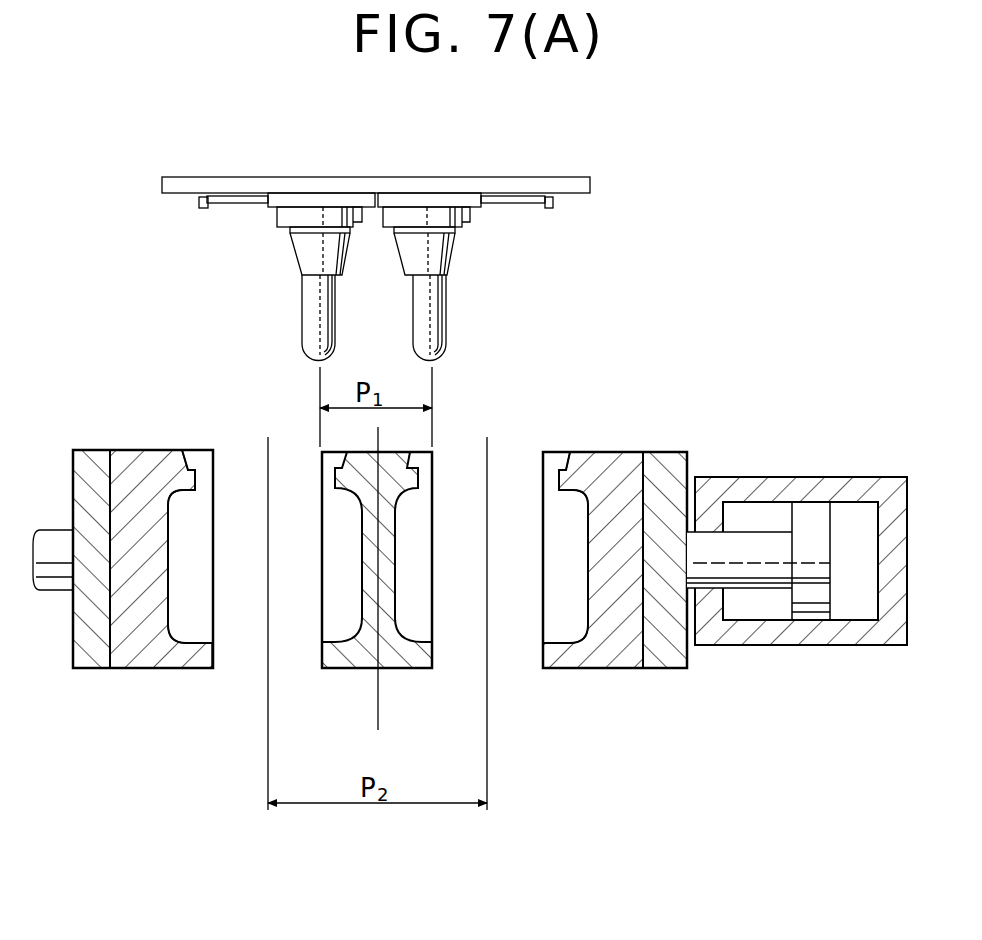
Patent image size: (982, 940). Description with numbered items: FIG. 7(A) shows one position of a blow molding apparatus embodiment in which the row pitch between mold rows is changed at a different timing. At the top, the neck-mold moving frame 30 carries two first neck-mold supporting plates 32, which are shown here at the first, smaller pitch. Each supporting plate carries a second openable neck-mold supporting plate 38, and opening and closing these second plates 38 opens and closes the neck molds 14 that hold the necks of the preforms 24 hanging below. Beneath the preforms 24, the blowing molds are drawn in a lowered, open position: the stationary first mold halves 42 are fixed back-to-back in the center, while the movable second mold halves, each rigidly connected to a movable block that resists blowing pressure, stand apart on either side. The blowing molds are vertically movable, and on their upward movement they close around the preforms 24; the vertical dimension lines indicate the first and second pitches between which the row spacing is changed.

The neck-mold moving frame 30 is at (462, 185).
The first neck-mold supporting plate 32 is at (305, 196).
The second openable neck-mold supporting plate 38 is at (280, 218).
The neck mold 14 is at (302, 255).
The preform 24 is at (313, 328).
The first mold half 42 is at (348, 658).